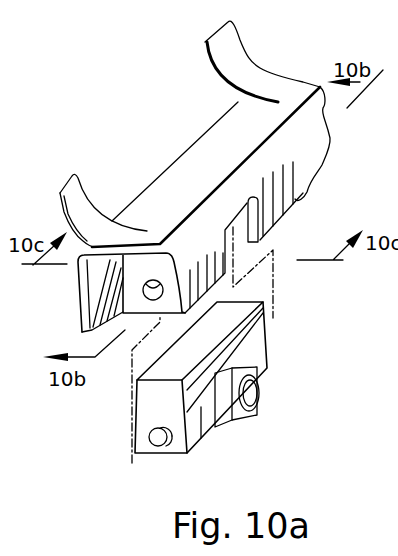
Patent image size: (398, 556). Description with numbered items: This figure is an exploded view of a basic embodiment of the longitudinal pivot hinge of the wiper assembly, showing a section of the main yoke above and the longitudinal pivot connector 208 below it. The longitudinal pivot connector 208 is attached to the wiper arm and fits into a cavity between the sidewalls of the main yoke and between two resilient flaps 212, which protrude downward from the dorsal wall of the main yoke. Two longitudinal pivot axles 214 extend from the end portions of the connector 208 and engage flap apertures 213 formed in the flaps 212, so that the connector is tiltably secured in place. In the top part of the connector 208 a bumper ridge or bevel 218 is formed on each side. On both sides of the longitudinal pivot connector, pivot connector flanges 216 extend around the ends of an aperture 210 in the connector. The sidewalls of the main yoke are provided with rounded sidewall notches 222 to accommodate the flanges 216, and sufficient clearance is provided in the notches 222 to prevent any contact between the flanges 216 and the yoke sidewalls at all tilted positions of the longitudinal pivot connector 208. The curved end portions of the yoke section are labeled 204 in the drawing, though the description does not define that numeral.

The curved end flange 204 is at (217, 43).
The longitudinal pivot connector 208 is at (202, 417).
The aperture 210 is at (249, 403).
The resilient flaps 212 is at (135, 268).
The flap apertures 213 is at (150, 291).
The longitudinal pivot axles 214 is at (160, 443).
The pivot connector flanges 216 is at (260, 378).
The bumper ridge or bevel 218 is at (263, 308).
The rounded sidewall notches 222 is at (242, 223).